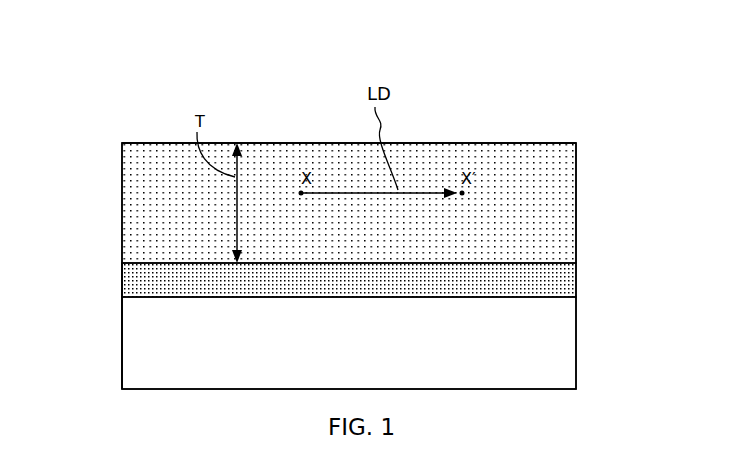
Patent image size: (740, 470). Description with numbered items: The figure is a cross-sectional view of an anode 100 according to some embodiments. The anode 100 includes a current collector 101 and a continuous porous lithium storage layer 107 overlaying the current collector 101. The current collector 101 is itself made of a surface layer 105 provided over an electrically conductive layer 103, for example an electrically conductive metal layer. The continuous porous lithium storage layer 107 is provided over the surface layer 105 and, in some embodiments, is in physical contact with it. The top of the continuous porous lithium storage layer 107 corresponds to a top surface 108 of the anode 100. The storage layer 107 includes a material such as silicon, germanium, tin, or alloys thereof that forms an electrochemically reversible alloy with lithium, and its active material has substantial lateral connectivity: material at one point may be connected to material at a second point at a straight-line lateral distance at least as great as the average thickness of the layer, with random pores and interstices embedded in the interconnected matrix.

The anode 100 is at (577, 83).
The current collector 101 is at (100, 268).
The electrically conductive layer 103 is at (543, 332).
The surface layer 105 is at (560, 278).
The continuous porous lithium storage layer 107 is at (143, 202).
The top surface 108 is at (270, 142).